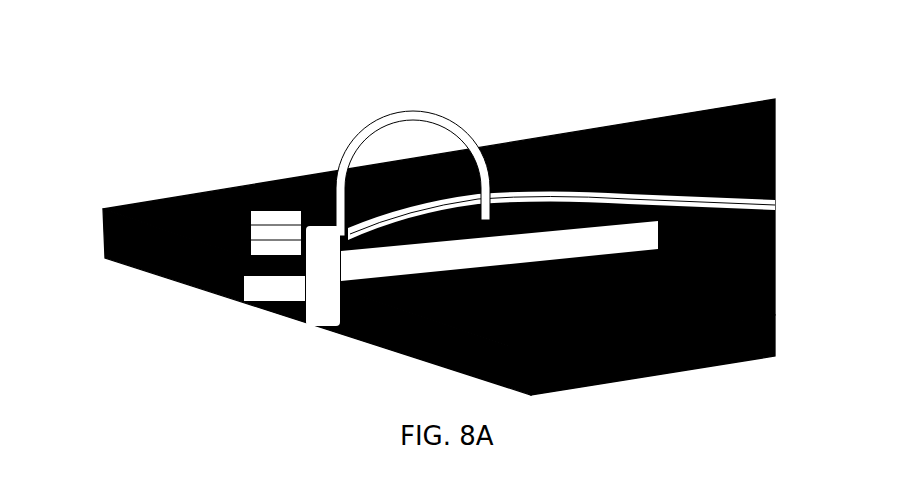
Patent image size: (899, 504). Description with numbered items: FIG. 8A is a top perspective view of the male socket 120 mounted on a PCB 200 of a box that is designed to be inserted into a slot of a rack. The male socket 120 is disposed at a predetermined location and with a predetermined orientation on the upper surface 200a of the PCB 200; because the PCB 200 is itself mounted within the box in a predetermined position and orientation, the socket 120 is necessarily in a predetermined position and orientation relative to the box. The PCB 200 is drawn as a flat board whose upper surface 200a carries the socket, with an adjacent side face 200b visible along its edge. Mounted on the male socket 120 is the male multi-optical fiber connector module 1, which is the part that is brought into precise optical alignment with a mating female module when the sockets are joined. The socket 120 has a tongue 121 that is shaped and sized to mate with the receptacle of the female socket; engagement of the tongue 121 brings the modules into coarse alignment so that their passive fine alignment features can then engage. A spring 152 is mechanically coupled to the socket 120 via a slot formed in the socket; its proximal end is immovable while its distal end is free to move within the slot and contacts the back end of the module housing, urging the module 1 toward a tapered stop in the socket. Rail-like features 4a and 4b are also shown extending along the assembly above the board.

The PCB 200 is at (125, 200).
The upper surface of the PCB 200a is at (630, 307).
The second side surface 200b is at (720, 355).
The male multi-optical fiber connector module 1 is at (280, 218).
The male socket 120 is at (263, 205).
The tongue 121 is at (232, 274).
The spring 152 is at (399, 107).
The first rail 4a is at (425, 198).
The second rail 4b is at (380, 198).